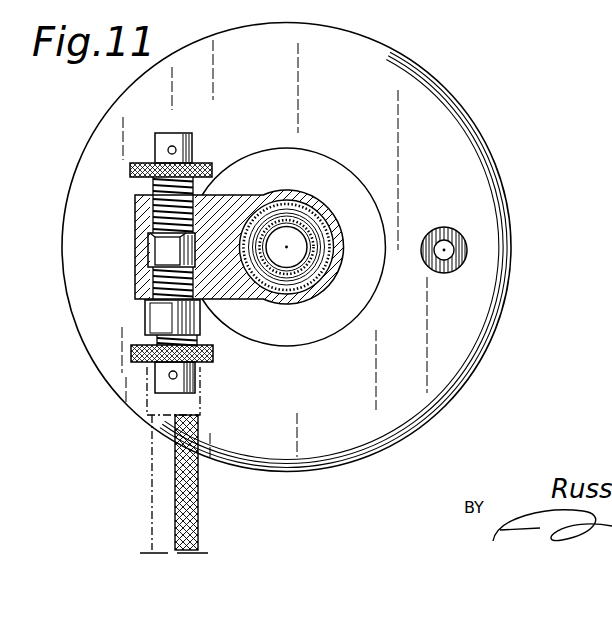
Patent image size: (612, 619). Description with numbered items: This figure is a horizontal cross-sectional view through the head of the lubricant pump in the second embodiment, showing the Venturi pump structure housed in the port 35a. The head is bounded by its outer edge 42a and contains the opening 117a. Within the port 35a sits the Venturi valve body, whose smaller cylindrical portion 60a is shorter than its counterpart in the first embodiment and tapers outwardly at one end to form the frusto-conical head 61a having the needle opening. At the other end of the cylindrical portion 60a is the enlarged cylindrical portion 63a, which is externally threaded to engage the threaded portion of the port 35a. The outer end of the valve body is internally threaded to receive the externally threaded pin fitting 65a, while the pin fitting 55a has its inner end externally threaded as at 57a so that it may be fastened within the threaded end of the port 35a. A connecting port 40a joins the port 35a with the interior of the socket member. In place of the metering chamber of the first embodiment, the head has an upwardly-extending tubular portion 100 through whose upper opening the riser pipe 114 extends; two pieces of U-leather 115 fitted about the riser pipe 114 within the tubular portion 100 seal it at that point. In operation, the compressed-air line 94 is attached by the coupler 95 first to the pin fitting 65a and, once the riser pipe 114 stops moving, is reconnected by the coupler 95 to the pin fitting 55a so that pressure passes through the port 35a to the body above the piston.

The port 35a is at (135, 248).
The connecting port 40a is at (234, 197).
The outer edge 42a is at (486, 148).
The pin fitting 55a is at (193, 139).
The threaded inner end of the pin fitting 57a is at (152, 182).
The cylindrical portion 60a is at (170, 258).
The frusto-conical head 61a is at (153, 238).
The enlarged cylindrical portion 63a is at (157, 292).
The pin fitting 65a is at (200, 369).
The compressed-air line 94 is at (198, 517).
The coupler 95 is at (200, 395).
The tubular portion 100 is at (341, 238).
The riser pipe 114 is at (290, 263).
The U-leather 115 is at (305, 215).
The opening 117a is at (468, 243).